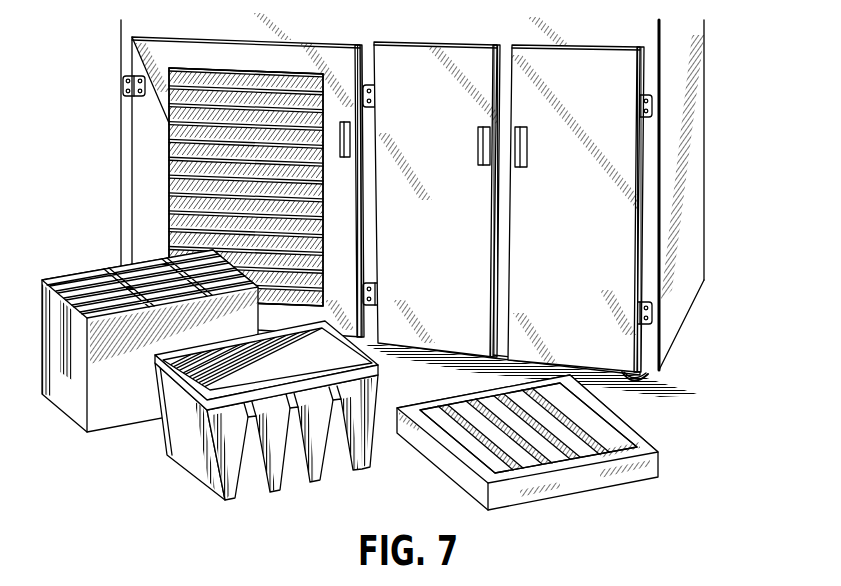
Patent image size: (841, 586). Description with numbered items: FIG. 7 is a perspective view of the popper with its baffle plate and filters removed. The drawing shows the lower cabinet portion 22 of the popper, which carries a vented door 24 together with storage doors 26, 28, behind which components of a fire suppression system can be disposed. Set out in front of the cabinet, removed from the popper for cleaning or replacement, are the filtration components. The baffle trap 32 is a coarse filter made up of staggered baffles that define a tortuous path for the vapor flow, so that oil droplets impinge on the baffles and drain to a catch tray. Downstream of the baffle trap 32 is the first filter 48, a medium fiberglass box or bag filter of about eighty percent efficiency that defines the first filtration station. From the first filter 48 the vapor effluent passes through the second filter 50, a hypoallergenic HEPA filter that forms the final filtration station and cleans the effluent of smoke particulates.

The lower cabinet portion 22 is at (121, 62).
The vented door 24 is at (169, 170).
The storage door 26 is at (446, 131).
The storage door 28 is at (598, 203).
The first filter 48 is at (80, 255).
The second filter 50 is at (192, 489).
The baffle trap 32 is at (665, 460).